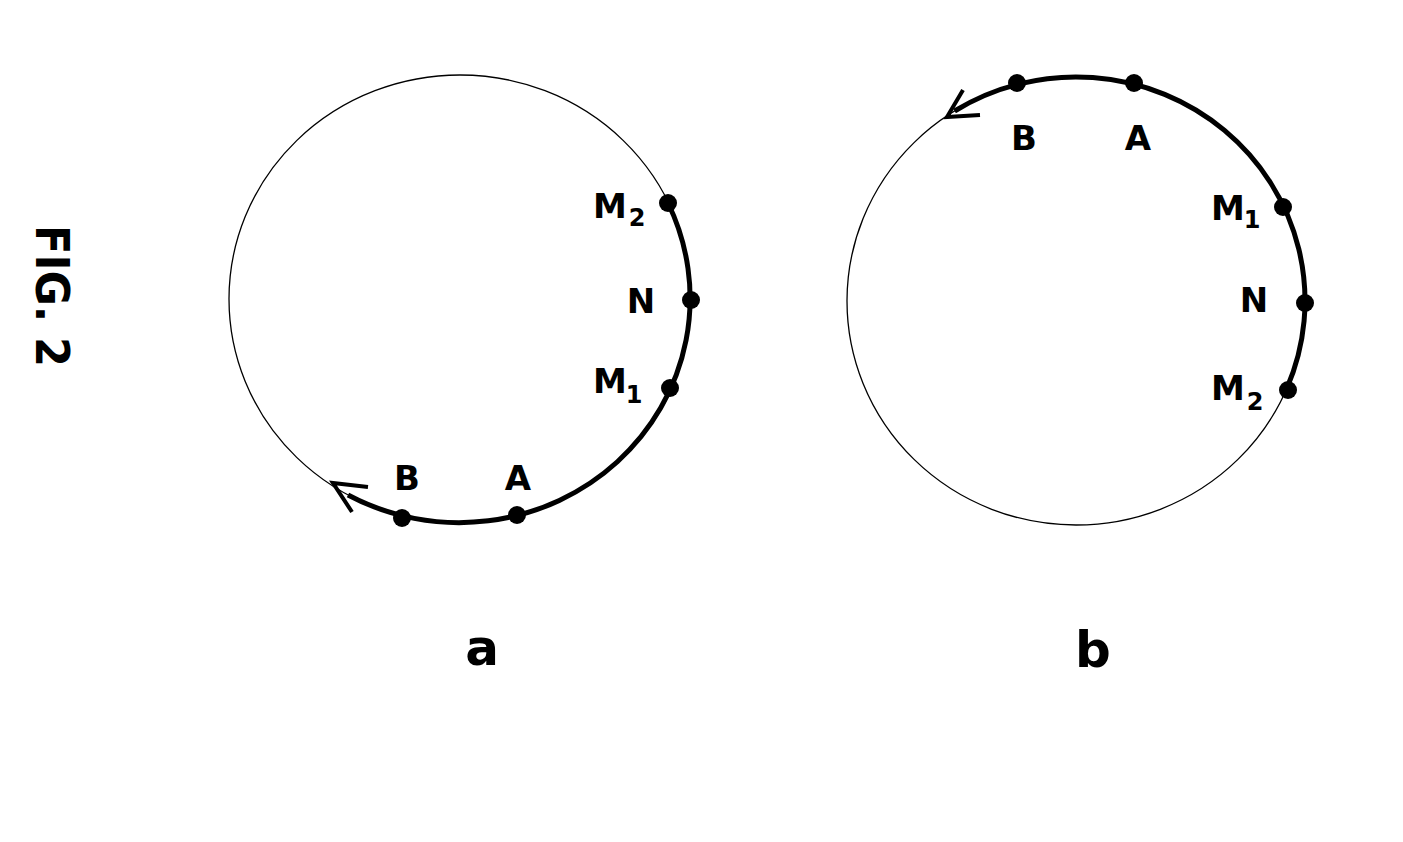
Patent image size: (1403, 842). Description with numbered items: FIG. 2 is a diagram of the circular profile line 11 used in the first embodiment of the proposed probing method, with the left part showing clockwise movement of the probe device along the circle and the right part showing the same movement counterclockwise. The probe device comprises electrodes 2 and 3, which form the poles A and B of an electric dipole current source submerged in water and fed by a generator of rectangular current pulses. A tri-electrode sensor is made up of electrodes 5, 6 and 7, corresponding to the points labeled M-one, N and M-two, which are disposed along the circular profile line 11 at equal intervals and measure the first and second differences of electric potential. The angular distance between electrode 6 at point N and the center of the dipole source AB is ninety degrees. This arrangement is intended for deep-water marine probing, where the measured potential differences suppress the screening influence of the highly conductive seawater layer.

The electrode 2 is at (825, 305).
The electrode 3 is at (708, 305).
The electrode 5 is at (999, 298).
The electrode 6 is at (1020, 303).
The electrode 7 is at (1000, 300).
The circular profile line 11 is at (617, 468).